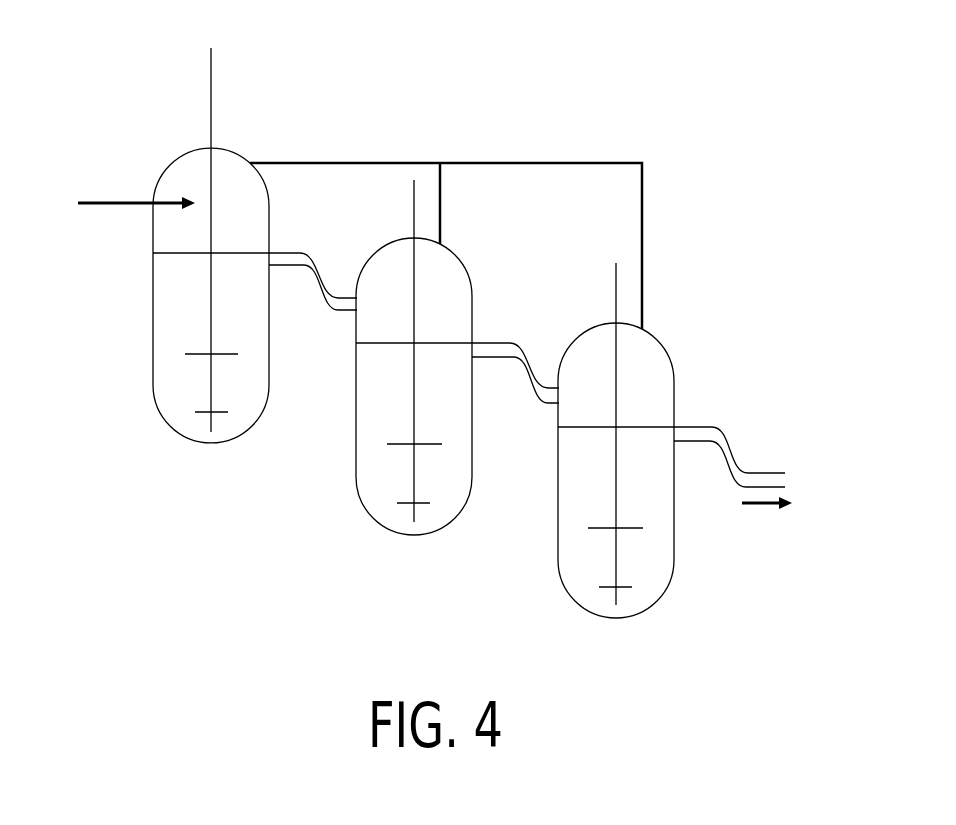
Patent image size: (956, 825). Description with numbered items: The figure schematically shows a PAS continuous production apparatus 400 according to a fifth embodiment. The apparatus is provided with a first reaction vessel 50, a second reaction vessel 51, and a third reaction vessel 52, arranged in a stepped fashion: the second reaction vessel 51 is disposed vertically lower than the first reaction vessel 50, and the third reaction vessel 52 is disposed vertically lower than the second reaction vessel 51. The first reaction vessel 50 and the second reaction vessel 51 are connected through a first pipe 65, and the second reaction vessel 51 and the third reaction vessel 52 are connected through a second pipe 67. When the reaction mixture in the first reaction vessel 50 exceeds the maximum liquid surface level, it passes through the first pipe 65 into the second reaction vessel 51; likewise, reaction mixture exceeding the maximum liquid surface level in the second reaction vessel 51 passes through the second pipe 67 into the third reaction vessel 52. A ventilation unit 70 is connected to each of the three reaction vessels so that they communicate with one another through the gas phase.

The PAS continuous production apparatus 400 is at (701, 69).
The first reaction vessel 50 is at (170, 168).
The second reaction vessel 51 is at (373, 255).
The third reaction vessel 52 is at (578, 339).
The first pipe 65 is at (327, 298).
The second pipe 67 is at (530, 392).
The ventilation unit 70 is at (327, 162).